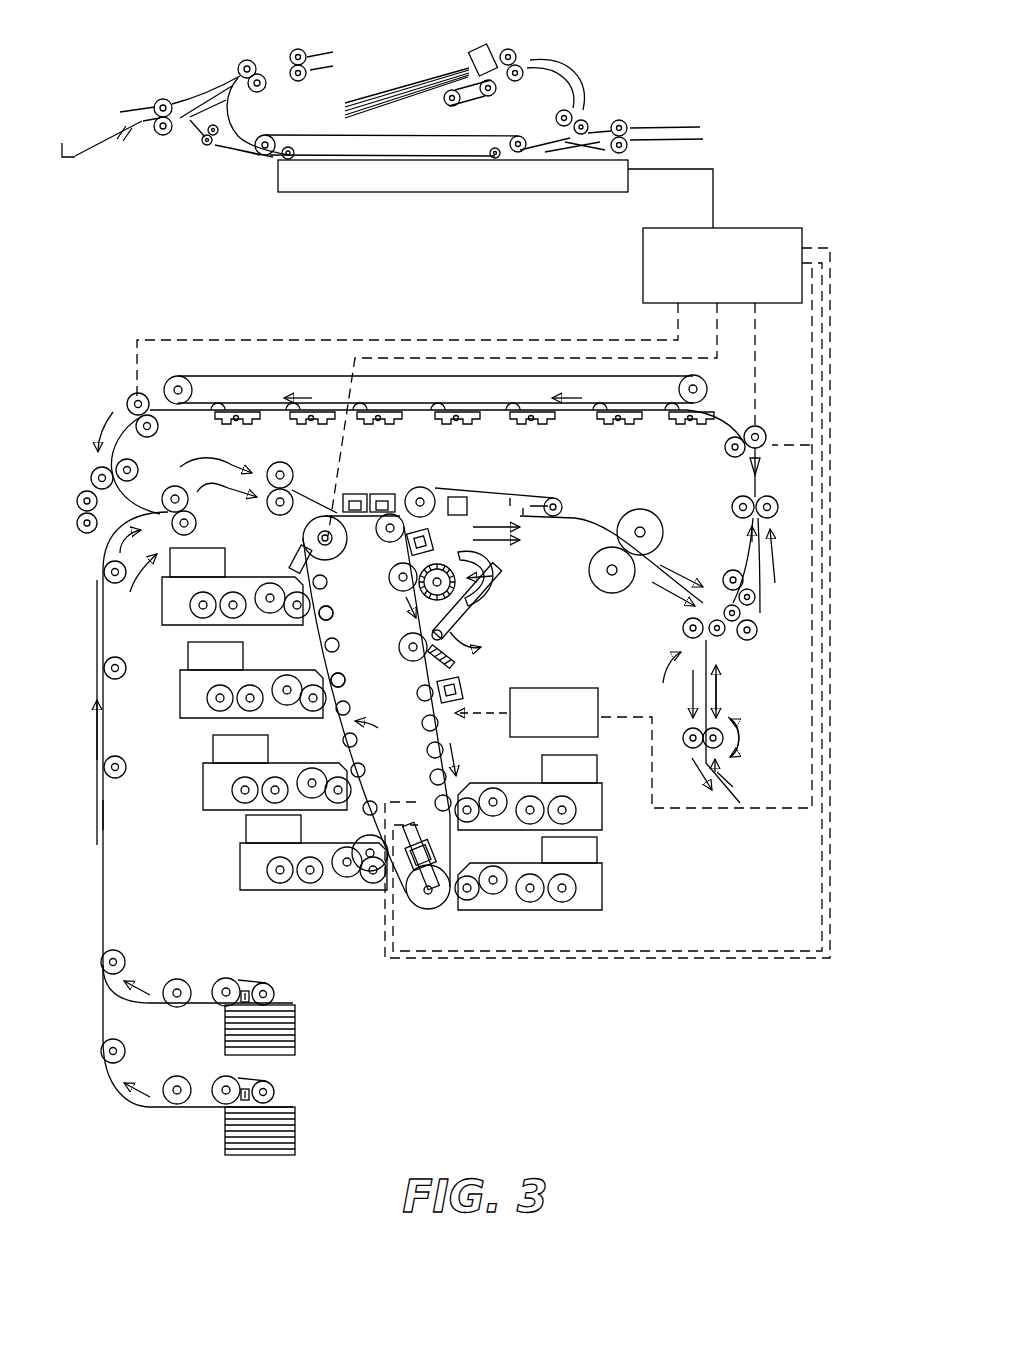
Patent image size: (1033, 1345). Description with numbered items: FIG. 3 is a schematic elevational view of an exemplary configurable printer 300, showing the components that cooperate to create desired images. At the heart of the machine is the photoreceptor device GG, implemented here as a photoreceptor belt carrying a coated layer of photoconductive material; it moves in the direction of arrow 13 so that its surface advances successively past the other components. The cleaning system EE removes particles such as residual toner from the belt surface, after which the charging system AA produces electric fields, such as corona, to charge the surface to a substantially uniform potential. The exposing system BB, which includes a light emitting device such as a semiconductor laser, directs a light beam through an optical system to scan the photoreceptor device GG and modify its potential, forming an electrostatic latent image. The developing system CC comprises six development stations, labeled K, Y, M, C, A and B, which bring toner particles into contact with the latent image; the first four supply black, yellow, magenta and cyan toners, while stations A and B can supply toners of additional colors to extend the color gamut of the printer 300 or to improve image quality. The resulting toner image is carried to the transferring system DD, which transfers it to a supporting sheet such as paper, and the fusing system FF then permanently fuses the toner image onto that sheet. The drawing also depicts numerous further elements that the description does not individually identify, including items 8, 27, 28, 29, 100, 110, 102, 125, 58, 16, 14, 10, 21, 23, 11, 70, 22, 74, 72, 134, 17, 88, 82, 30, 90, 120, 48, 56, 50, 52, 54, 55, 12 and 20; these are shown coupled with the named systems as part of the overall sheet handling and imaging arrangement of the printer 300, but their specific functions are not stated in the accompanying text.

The document handler 8 is at (185, 82).
The image input section 27 is at (618, 75).
The raster input scanner 28 is at (397, 183).
The controller 29 is at (708, 281).
The sheet transport loop 100 is at (432, 378).
The transport belt 110 is at (248, 375).
The transport rollers 102 is at (128, 403).
The registration rollers 125 is at (303, 478).
The transferring system DD is at (377, 482).
The developer unit 58 is at (392, 495).
The photoreceptor 16 is at (306, 534).
The belt roller 14 is at (383, 545).
The intermediate transfer belt 10 is at (443, 730).
The backup roller 21 is at (388, 598).
The support roller 23 is at (329, 612).
The arrow 13 is at (410, 606).
The belt path arrow 11 is at (382, 731).
The printer 300 is at (478, 613).
The sheet guide 70 is at (578, 576).
The cleaning system EE is at (488, 573).
The fusing system FF is at (611, 511).
The exposing system BB is at (550, 677).
The charging system AA is at (469, 673).
The charging device 22 is at (462, 693).
The transfer roller 74 is at (648, 523).
The backup transfer roller 72 is at (615, 593).
The fuser rollers 134 is at (697, 604).
The inverter gate 17 is at (764, 473).
The exit rollers 88 is at (750, 465).
The output module 82 is at (680, 714).
The raster output scanner 30 is at (598, 740).
The developing system CC is at (172, 639).
The developer arrow 90 is at (306, 634).
The photoreceptor device GG is at (336, 754).
The sheet path arrow 120 is at (131, 589).
The duplex return path 48 is at (104, 729).
The return path segment 56 is at (104, 815).
The sheet feeder 50 is at (196, 976).
The feed roller 52 is at (218, 1005).
The paper tray 54 is at (297, 1002).
The paper tray 55 is at (296, 1107).
The transfer roller 12 is at (358, 848).
The cleaning station 20 is at (423, 908).